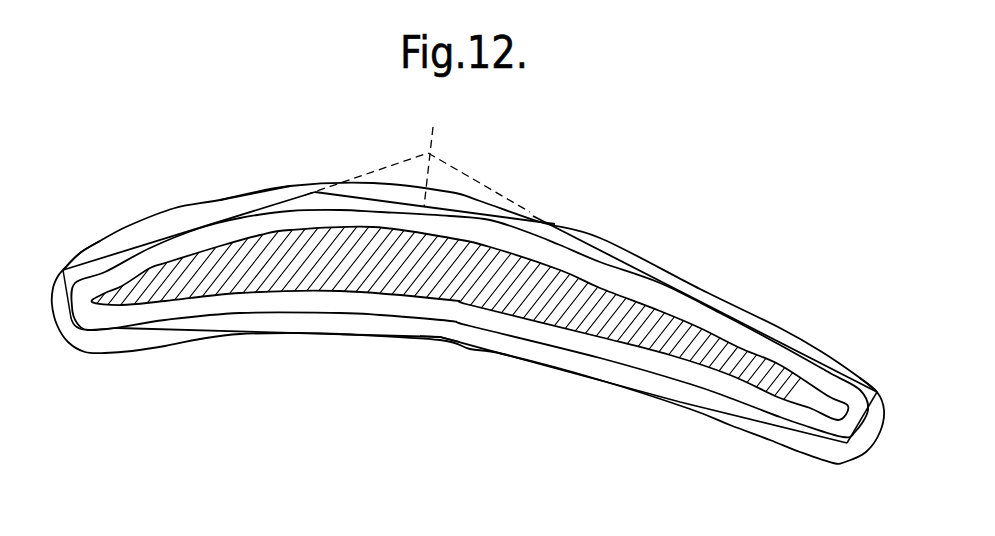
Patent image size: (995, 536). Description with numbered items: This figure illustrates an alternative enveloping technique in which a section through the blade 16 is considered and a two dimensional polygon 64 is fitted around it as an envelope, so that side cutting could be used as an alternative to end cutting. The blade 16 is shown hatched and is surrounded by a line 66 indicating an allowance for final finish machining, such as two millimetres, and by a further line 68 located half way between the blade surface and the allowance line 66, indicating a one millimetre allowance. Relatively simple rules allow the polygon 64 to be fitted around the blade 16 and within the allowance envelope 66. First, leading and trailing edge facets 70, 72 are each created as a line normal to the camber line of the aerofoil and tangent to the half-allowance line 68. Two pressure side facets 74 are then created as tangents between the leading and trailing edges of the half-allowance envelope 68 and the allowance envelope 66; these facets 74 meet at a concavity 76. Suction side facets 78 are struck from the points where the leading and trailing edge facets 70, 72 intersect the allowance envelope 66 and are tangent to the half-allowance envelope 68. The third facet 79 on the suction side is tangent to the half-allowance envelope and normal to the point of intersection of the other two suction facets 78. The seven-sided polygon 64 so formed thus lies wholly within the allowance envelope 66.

The blade 16 is at (650, 318).
The two dimensional polygon 64 is at (125, 334).
The allowance line 66 is at (801, 453).
The half-allowance line 68 is at (649, 373).
The leading edge facet 70 is at (63, 270).
The trailing edge facet 72 is at (882, 413).
The pressure side facets 74 is at (177, 337).
The concavity 76 is at (432, 338).
The suction side facets 78 is at (277, 203).
The third facet 79 is at (355, 200).